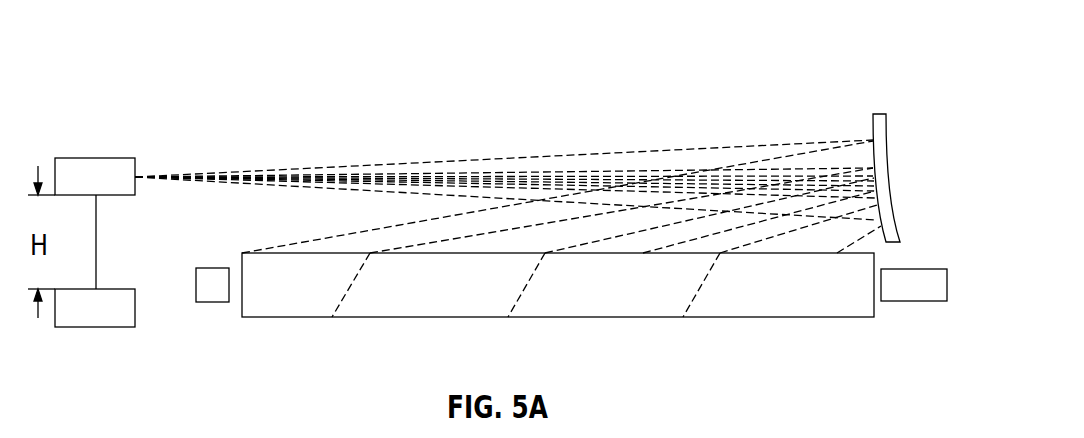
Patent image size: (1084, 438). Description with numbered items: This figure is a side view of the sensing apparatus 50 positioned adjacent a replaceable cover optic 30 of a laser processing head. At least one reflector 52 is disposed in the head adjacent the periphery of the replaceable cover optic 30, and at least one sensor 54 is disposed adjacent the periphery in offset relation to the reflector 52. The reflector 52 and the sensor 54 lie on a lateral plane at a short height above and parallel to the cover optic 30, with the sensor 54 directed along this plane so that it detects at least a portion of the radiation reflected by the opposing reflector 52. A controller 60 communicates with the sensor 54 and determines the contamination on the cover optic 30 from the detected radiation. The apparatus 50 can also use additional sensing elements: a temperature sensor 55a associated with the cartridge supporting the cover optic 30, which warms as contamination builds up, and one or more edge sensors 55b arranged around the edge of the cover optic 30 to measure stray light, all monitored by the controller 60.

The sensing apparatus 50 is at (811, 70).
The reflector 52 is at (888, 140).
The sensor 54 is at (97, 158).
The replaceable cover optic 30 is at (768, 317).
The temperature sensor 55a is at (213, 303).
The edge sensor 55b is at (911, 302).
The controller 60 is at (97, 328).